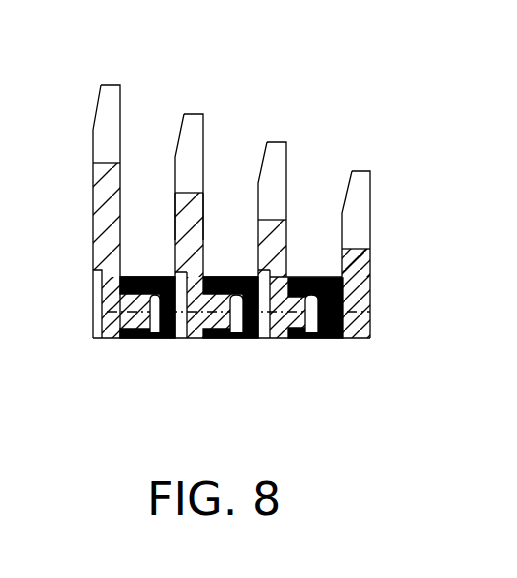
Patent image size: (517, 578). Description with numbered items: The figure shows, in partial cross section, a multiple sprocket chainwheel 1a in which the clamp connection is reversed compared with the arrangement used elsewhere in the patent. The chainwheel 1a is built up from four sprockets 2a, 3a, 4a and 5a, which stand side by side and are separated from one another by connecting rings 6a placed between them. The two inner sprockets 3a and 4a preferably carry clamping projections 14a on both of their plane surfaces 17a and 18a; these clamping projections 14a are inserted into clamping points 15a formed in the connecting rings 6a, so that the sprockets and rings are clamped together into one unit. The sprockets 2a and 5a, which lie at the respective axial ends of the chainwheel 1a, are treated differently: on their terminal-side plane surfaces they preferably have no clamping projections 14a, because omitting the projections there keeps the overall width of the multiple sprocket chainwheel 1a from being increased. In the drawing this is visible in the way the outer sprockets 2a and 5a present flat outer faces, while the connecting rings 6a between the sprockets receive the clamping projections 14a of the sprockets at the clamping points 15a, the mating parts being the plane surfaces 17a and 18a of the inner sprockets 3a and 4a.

The multiple sprocket chainwheel 1a is at (85, 294).
The sprocket 2a is at (108, 93).
The sprocket 3a is at (192, 125).
The sprocket 4a is at (273, 152).
The sprocket 5a is at (358, 187).
The connecting ring 6a is at (147, 277).
The clamping projection 14a is at (125, 320).
The clamping point 15a is at (288, 338).
The plane surface 17a is at (206, 205).
The plane surface 18a is at (175, 220).